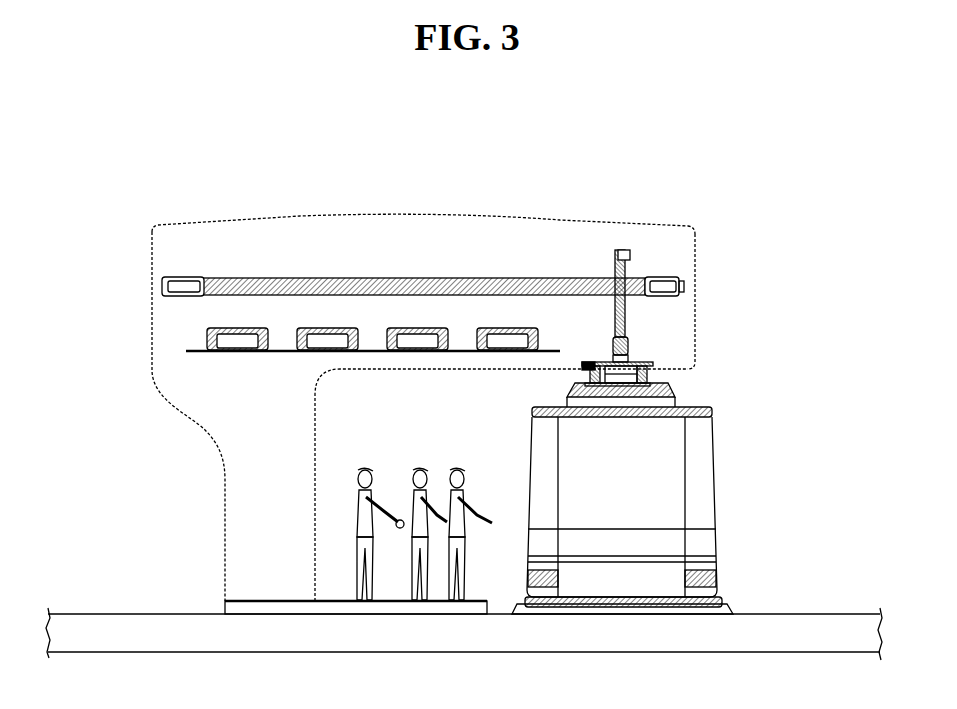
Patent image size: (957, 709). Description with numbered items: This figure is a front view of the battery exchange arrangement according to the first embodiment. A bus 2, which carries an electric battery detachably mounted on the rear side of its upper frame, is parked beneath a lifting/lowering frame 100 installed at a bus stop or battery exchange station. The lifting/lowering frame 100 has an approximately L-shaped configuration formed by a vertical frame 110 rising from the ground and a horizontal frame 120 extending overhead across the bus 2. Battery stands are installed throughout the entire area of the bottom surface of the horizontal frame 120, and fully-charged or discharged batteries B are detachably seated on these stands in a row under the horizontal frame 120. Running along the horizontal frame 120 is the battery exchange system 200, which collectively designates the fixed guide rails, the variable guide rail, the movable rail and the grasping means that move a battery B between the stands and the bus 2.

The lifting/lowering frame 100 is at (449, 215).
The vertical frame 110 is at (210, 433).
The horizontal frame 120 is at (697, 264).
The battery exchange system 200 is at (553, 278).
The battery B is at (240, 328).
The bus 2 is at (716, 457).